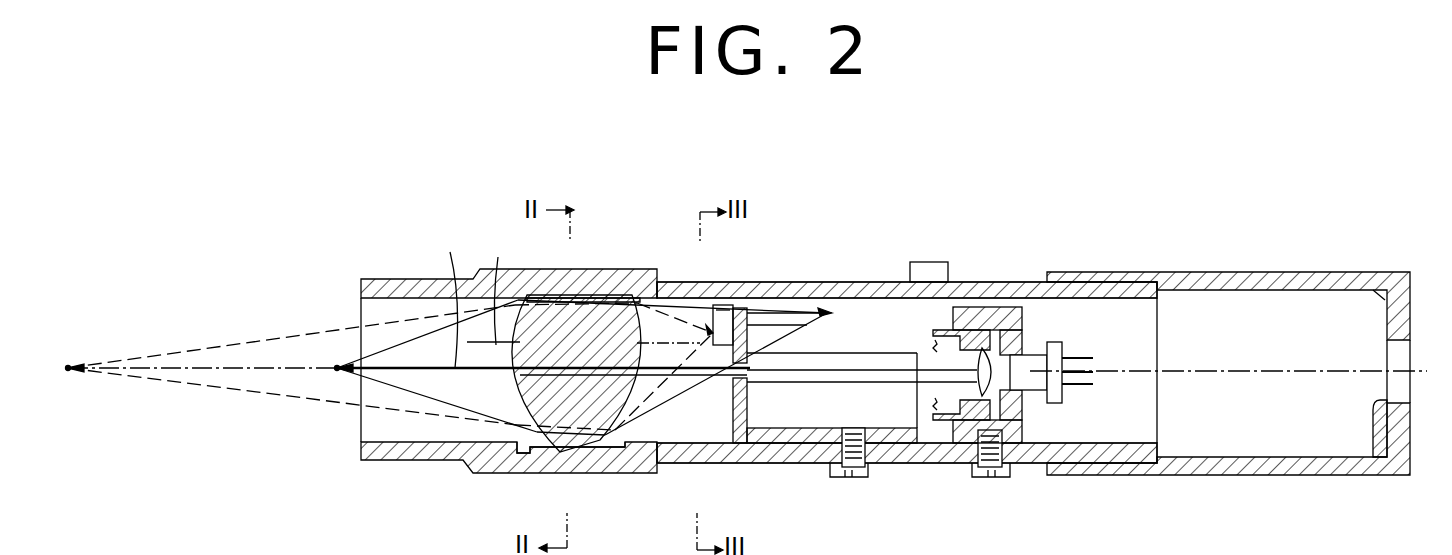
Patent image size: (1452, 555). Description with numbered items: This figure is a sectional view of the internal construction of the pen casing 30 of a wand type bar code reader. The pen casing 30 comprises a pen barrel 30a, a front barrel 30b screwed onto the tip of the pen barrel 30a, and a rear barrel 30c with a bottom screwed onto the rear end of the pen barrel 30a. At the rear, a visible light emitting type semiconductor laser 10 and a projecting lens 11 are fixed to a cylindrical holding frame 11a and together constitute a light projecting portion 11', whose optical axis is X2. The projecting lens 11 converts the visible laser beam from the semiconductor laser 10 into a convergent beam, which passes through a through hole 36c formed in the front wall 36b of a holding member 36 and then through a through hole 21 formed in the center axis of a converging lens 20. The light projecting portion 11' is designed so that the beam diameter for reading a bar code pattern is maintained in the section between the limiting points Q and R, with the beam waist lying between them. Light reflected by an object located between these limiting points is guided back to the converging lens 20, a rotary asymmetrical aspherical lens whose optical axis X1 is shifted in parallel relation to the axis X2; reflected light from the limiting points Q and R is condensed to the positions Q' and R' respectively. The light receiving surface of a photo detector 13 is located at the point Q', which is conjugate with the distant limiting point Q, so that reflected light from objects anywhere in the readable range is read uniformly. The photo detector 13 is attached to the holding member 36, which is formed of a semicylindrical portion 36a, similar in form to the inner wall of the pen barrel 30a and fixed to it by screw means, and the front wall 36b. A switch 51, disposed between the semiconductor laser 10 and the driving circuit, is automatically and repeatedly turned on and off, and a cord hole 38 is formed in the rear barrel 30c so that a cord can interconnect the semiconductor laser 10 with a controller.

The pen casing 30 is at (795, 282).
The pen barrel 30a is at (850, 282).
The front barrel 30b is at (396, 282).
The rear barrel 30c is at (1165, 272).
The cord hole 38 is at (1375, 402).
The switch 51 is at (932, 262).
The through hole 21 is at (636, 375).
The converging lens 20 is at (518, 452).
The optical axis of the converging lens X1 is at (493, 287).
The optical axis of the light projecting portion X2 is at (454, 295).
The distant limiting point Q is at (388, 366).
The near limiting point R is at (560, 366).
The conjugate position of point Q Q' is at (722, 289).
The conjugate position of point R R' is at (815, 323).
The photo detector 13 is at (725, 305).
The holding member 36 is at (735, 418).
The semicylindrical portion 36a is at (830, 428).
The front wall 36b is at (775, 443).
The through hole 36c is at (752, 365).
The cylindrical holding frame 11a is at (972, 307).
The projecting lens 11 is at (1020, 313).
The light projecting portion 11' is at (986, 323).
The semiconductor laser 10 is at (1050, 355).